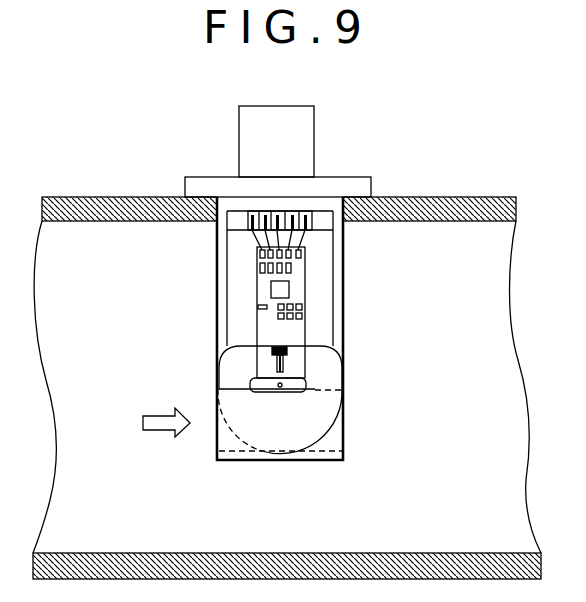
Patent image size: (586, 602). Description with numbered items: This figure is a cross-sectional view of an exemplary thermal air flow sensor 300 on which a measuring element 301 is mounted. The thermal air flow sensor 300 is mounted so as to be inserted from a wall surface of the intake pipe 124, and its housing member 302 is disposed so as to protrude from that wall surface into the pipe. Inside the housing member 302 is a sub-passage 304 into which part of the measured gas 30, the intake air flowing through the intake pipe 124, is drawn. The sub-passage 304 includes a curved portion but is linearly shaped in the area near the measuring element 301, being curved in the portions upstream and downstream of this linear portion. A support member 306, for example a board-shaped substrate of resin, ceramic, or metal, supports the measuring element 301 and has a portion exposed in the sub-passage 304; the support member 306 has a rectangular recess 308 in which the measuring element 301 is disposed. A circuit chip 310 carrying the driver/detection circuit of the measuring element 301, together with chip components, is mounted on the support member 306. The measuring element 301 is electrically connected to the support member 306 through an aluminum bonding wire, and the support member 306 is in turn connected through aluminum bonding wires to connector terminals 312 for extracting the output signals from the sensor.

The intake pipe 124 is at (287, 321).
The thermal air flow sensor 300 is at (344, 120).
The housing member 302 is at (230, 328).
The connector 312 is at (351, 201).
The circuit chip 310 is at (354, 304).
The measuring element 301 is at (366, 328).
The support member 306 is at (358, 404).
The sub-passage 304 is at (233, 439).
The rectangular recess 308 is at (366, 428).
The measured gas 30 is at (153, 422).